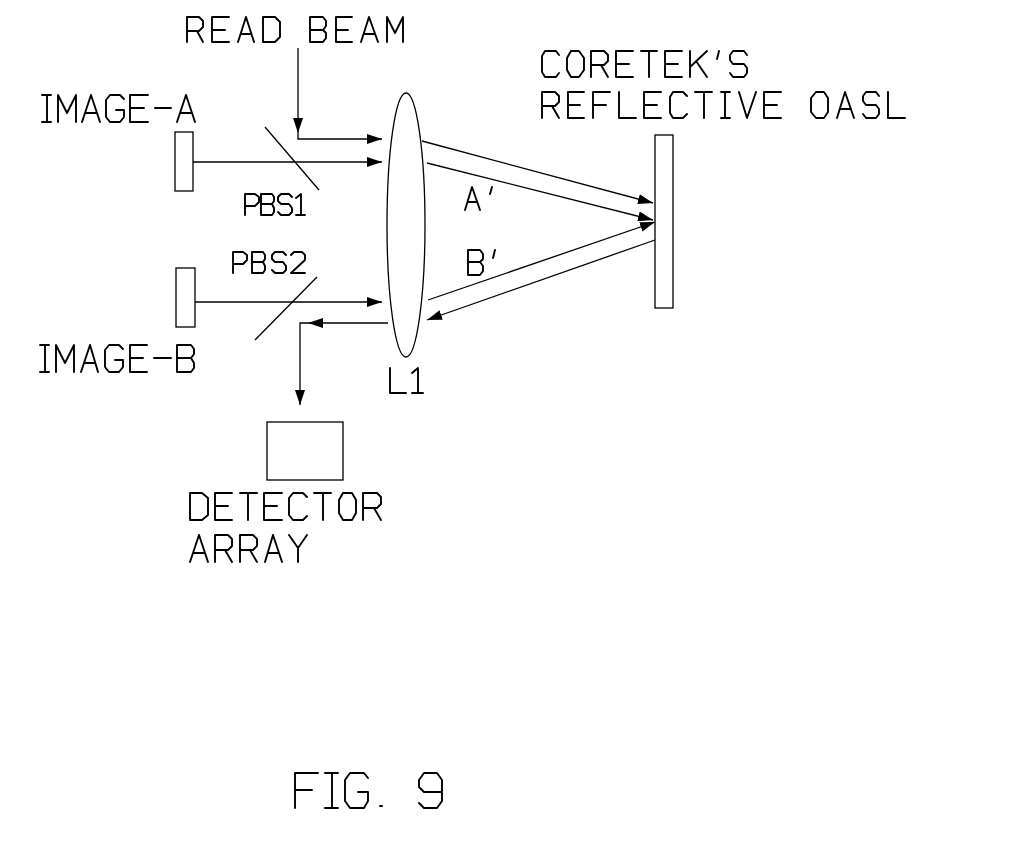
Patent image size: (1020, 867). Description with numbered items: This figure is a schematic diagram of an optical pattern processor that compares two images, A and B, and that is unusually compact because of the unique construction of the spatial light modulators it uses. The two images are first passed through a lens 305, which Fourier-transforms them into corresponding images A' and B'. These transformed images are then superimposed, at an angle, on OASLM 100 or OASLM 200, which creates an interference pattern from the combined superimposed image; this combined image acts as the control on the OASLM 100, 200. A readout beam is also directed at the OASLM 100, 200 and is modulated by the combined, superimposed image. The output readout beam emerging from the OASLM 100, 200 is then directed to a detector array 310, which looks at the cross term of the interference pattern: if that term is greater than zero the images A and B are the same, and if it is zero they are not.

The OASLM 100 is at (724, 296).
The OASLM 200 is at (667, 312).
The lens 305 is at (422, 335).
The detector array 310 is at (343, 451).